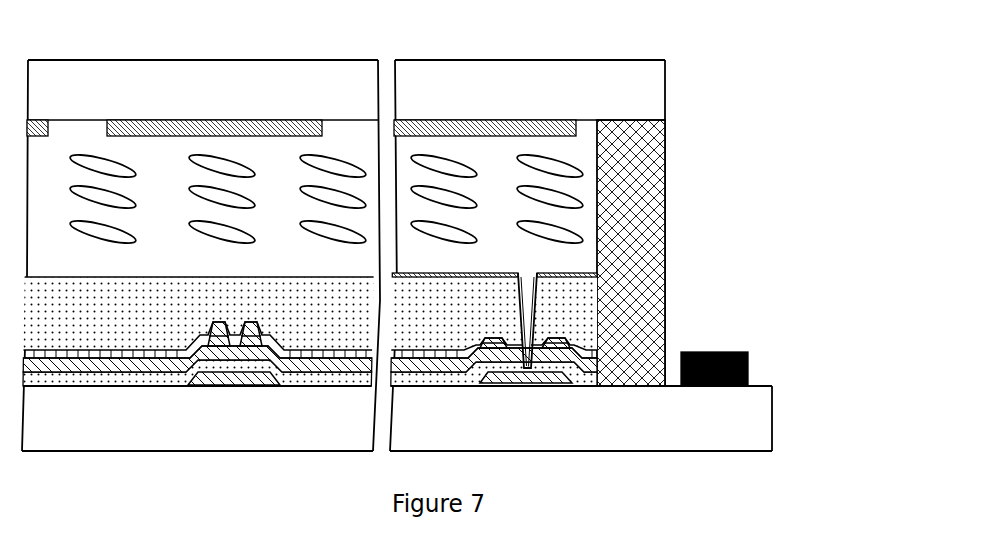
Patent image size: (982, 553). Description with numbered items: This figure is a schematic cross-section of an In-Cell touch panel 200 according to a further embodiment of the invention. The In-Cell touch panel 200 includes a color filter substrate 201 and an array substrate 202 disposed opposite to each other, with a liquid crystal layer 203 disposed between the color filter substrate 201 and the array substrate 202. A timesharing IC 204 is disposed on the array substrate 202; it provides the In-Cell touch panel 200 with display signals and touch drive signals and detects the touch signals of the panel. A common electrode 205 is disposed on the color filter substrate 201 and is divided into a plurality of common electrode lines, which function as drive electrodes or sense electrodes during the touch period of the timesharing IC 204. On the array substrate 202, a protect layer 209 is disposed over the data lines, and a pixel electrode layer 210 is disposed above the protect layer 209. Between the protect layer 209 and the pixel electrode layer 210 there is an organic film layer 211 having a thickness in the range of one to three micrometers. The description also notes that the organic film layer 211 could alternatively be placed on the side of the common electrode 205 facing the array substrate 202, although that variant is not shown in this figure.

The In-Cell touch panel 200 is at (88, 28).
The color filter substrate 201 is at (630, 85).
The array substrate 202 is at (747, 438).
The liquid crystal layer 203 is at (563, 200).
The timesharing IC 204 is at (750, 378).
The common electrode 205 is at (558, 126).
The protect layer 209 is at (593, 357).
The pixel electrode layer 210 is at (590, 278).
The organic film layer 211 is at (578, 307).